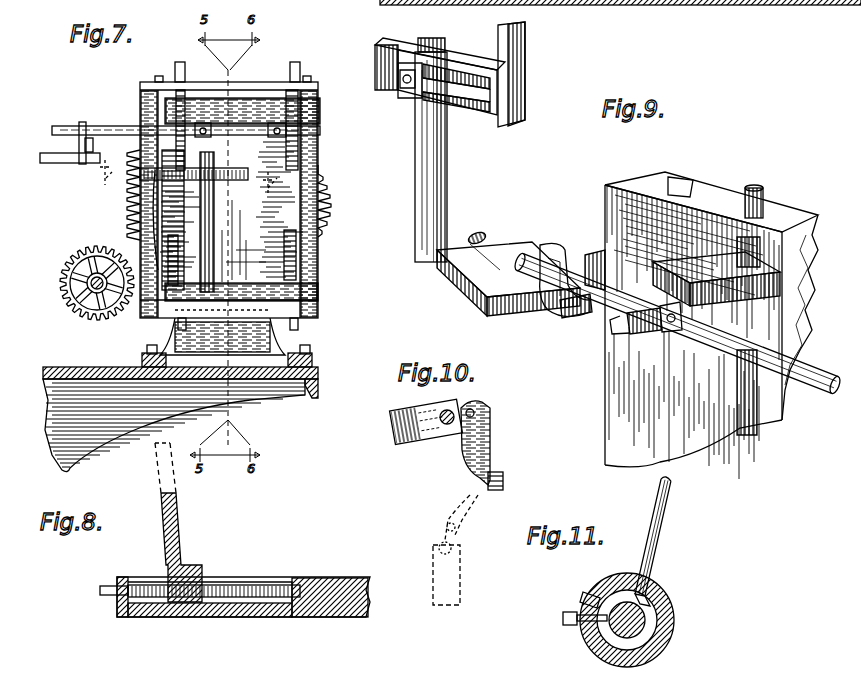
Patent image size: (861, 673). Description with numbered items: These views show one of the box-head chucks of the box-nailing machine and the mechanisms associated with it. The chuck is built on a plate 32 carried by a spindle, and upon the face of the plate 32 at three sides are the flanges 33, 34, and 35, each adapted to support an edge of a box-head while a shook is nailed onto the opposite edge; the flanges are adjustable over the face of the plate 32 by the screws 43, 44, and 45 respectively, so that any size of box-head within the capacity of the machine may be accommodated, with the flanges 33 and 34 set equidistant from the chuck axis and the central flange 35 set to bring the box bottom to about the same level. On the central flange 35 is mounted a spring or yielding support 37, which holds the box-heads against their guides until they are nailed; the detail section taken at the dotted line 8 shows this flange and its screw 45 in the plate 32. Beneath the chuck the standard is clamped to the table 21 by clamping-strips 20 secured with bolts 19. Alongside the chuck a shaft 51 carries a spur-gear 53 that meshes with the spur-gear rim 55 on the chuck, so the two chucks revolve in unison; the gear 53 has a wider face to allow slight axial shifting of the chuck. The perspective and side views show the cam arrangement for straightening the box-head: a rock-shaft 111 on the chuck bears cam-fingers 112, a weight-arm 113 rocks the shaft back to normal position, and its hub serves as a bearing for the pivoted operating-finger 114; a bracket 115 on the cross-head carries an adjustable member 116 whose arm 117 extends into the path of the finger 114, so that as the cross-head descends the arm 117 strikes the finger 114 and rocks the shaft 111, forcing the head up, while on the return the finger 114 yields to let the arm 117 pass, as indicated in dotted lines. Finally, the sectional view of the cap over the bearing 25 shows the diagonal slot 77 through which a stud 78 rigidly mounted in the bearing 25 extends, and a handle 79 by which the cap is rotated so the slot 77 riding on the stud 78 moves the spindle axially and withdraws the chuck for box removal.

In FIG. 7, the section line 8 is at (100, 178).
In FIG. 7, the bolts 19 is at (168, 339).
In FIG. 7, the clamping-strips 20 is at (324, 362).
In FIG. 7, the table 21 is at (320, 388).
In FIG. 9, the table 21 is at (440, 5).
In FIG. 11, the bearing 25 is at (672, 614).
In FIG. 7, the plate 32 is at (320, 258).
In FIG. 8, the plate 32 is at (294, 617).
In FIG. 9, the plate 32 is at (625, 414).
In FIG. 7, the flange 33 is at (319, 293).
In FIG. 7, the flange 34 is at (255, 96).
In FIG. 9, the flange 34 is at (716, 279).
In FIG. 7, the central flange 35 is at (184, 250).
In FIG. 8, the central flange 35 is at (180, 547).
In FIG. 7, the yielding support 37 is at (208, 170).
In FIG. 7, the screw 43 is at (300, 326).
In FIG. 7, the screw 44 is at (178, 70).
In FIG. 9, the screw 44 is at (758, 186).
In FIG. 7, the screw 45 is at (240, 182).
In FIG. 8, the screw 45 is at (245, 585).
In FIG. 7, the shaft 51 is at (66, 246).
In FIG. 7, the spur-gear 53 is at (62, 330).
In FIG. 7, the spur-gear rim 55 is at (127, 200).
In FIG. 11, the diagonal slot 77 is at (588, 597).
In FIG. 11, the stud 78 is at (563, 618).
In FIG. 11, the handle 79 is at (668, 524).
In FIG. 7, the rock-shaft 111 is at (112, 124).
In FIG. 9, the rock-shaft 111 is at (484, 236).
In FIG. 10, the rock-shaft 111 is at (445, 425).
In FIG. 7, the cam-fingers 112 is at (198, 122).
In FIG. 9, the cam-fingers 112 is at (628, 332).
In FIG. 7, the weight-arm 113 is at (80, 125).
In FIG. 9, the weight-arm 113 is at (472, 298).
In FIG. 10, the weight-arm 113 is at (392, 420).
In FIG. 7, the operating-finger 114 is at (90, 145).
In FIG. 9, the operating-finger 114 is at (548, 305).
In FIG. 10, the operating-finger 114 is at (489, 450).
In FIG. 9, the bracket 115 is at (527, 78).
In FIG. 9, the adjustable member 116 is at (418, 170).
In FIG. 7, the arm 117 is at (56, 164).
In FIG. 9, the arm 117 is at (570, 320).
In FIG. 10, the arm 117 is at (503, 483).